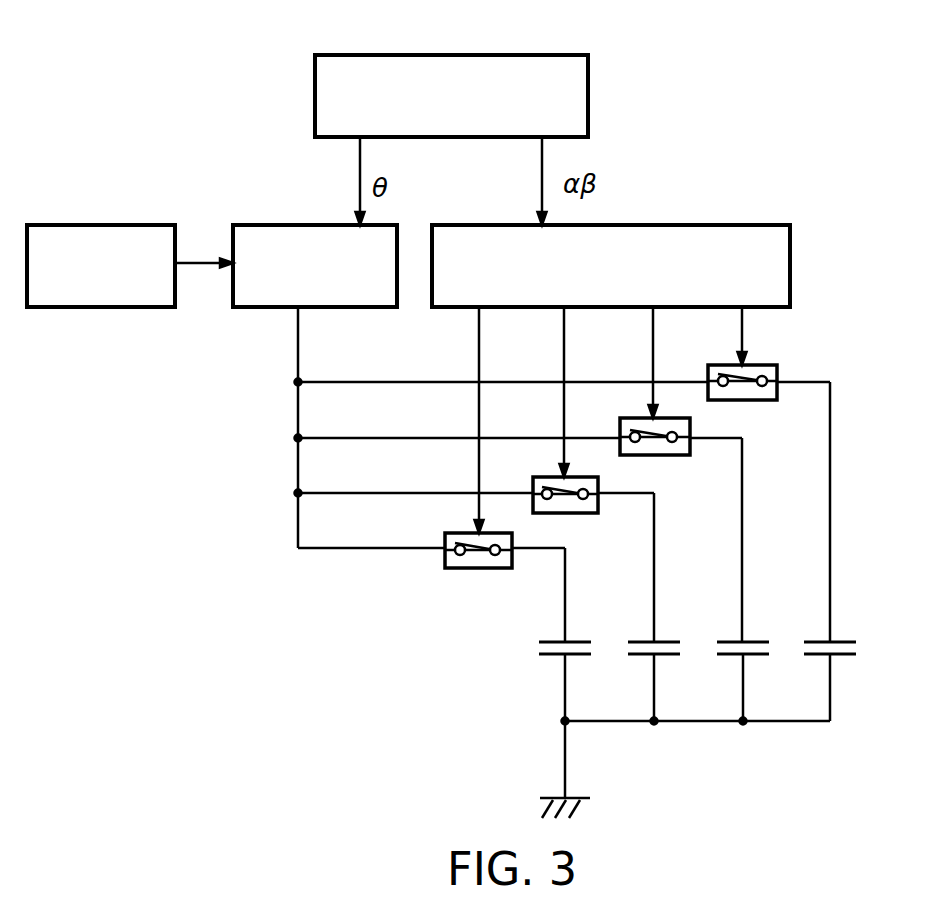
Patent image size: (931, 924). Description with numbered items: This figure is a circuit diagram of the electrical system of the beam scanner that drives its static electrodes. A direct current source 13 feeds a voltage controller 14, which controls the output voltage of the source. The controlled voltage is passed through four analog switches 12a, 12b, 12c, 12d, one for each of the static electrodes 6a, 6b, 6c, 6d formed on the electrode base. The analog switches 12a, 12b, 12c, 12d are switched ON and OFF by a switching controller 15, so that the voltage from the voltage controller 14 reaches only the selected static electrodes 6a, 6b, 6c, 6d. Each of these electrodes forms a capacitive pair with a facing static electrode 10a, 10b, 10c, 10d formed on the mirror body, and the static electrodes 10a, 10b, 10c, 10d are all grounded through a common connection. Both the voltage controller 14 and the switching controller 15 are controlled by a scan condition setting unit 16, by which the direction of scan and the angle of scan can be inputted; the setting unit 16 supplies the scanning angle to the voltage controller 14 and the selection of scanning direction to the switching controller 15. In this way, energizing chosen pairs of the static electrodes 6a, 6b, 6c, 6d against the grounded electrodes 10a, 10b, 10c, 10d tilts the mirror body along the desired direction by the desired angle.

The direct current source 13 is at (107, 225).
The voltage controller 14 is at (260, 225).
The switching controller 15 is at (715, 225).
The scan condition setting unit 16 is at (588, 95).
The analog switch 12a is at (444, 541).
The analog switch 12b is at (533, 484).
The analog switch 12c is at (620, 426).
The analog switch 12d is at (708, 369).
The static electrode 6a is at (551, 641).
The static electrode 6b is at (640, 641).
The static electrode 6c is at (729, 641).
The static electrode 6d is at (816, 641).
The static electrode 10a is at (551, 656).
The static electrode 10b is at (640, 656).
The static electrode 10c is at (729, 656).
The static electrode 10d is at (816, 656).